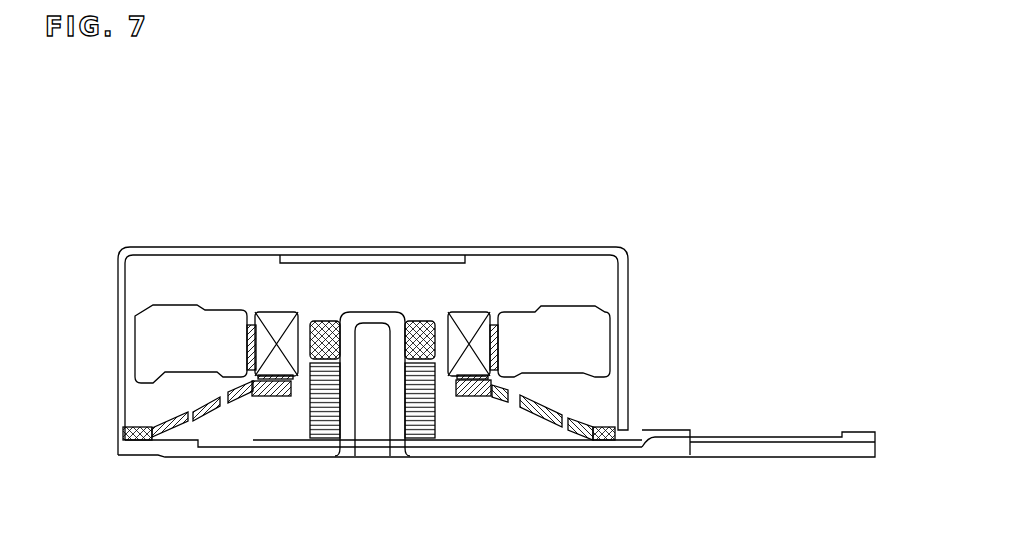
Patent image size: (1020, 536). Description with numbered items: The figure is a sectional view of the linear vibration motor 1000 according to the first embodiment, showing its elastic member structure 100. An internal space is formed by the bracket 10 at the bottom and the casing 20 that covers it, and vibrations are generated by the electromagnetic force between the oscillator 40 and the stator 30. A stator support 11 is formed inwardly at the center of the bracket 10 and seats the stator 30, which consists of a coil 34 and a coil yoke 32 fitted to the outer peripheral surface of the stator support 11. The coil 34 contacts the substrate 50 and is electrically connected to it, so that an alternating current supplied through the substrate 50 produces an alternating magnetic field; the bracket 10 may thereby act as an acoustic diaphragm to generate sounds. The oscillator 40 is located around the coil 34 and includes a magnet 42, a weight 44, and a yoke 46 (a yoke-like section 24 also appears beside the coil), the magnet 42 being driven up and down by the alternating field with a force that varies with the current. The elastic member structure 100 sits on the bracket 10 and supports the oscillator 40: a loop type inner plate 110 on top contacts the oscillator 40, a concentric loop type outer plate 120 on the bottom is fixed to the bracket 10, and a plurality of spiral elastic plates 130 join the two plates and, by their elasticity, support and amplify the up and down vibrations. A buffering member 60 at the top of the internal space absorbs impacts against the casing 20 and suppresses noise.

The linear vibration motor 1000 is at (507, 103).
The bracket 10 is at (178, 457).
The stator support 11 is at (370, 432).
The casing 20 is at (118, 363).
The yoke 24 is at (285, 344).
The stator 30 is at (270, 196).
The coil yoke 32 is at (320, 321).
The coil 34 is at (298, 372).
The oscillator 40 is at (460, 196).
The magnet 42 is at (467, 312).
The weight 44 is at (553, 306).
The yoke 46 is at (491, 325).
The substrate 50 is at (541, 447).
The buffering member 60 is at (368, 263).
The elastic member structure 100 is at (707, 332).
The loop type inner plate 110 is at (493, 378).
The loop type outer plate 120 is at (600, 427).
The spiral elastic plates 130 is at (547, 396).